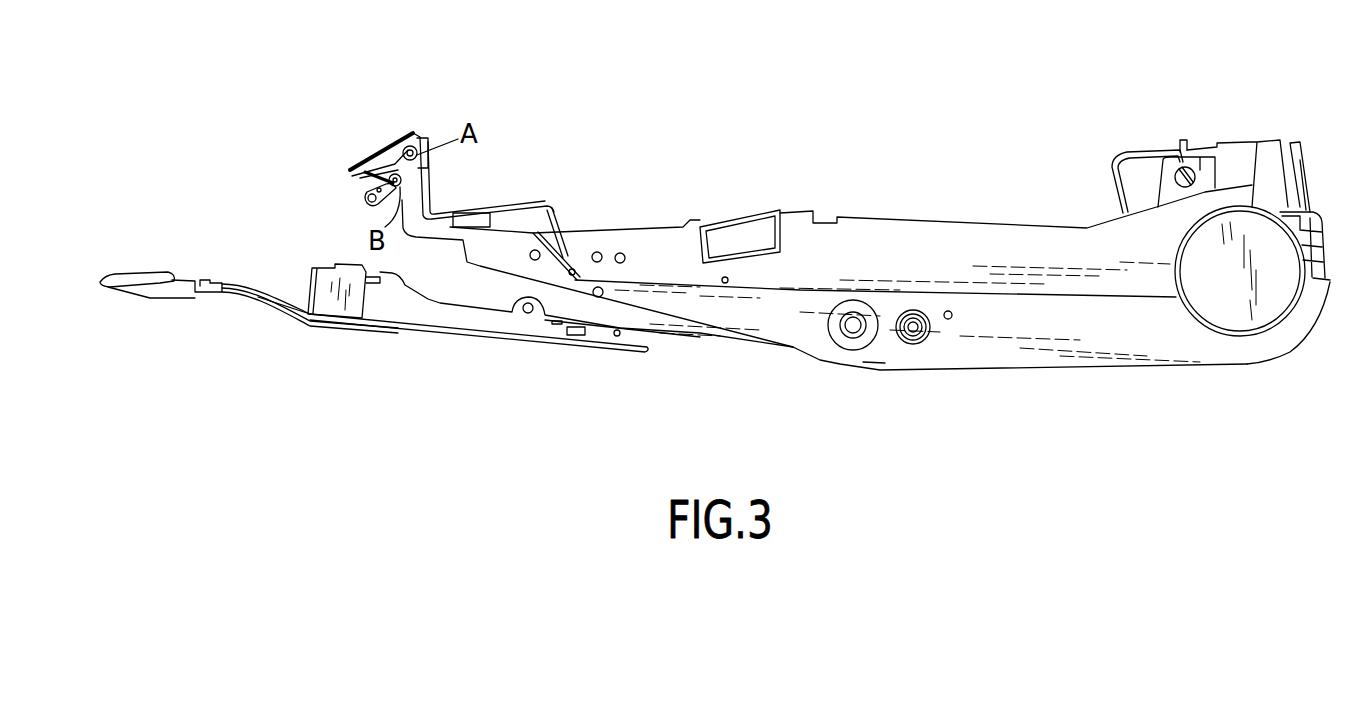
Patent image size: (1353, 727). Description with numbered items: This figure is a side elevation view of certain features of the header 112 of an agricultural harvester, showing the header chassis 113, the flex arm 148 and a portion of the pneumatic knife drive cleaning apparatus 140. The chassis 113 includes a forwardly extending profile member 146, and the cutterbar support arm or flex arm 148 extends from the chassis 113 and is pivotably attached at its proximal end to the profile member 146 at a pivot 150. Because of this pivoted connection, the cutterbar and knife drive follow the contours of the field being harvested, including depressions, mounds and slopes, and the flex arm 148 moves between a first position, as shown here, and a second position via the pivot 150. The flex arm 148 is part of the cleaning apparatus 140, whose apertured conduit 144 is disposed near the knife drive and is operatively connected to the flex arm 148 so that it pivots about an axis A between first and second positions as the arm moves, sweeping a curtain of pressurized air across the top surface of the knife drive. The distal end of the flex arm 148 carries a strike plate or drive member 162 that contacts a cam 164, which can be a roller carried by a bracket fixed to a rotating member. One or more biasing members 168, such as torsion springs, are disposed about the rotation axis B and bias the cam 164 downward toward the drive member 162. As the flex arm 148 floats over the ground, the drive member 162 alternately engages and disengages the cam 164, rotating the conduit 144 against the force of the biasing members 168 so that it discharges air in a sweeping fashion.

The header 112 is at (1085, 122).
The chassis 113 is at (928, 205).
The pneumatic knife drive cleaning apparatus 140 is at (355, 139).
The apertured conduit 144 is at (408, 133).
The profile member 146 is at (1037, 370).
The flex arm 148 is at (450, 337).
The pivot 150 is at (848, 328).
The drive member 162 is at (353, 267).
The cam 164 is at (365, 200).
The biasing member 168 is at (367, 170).